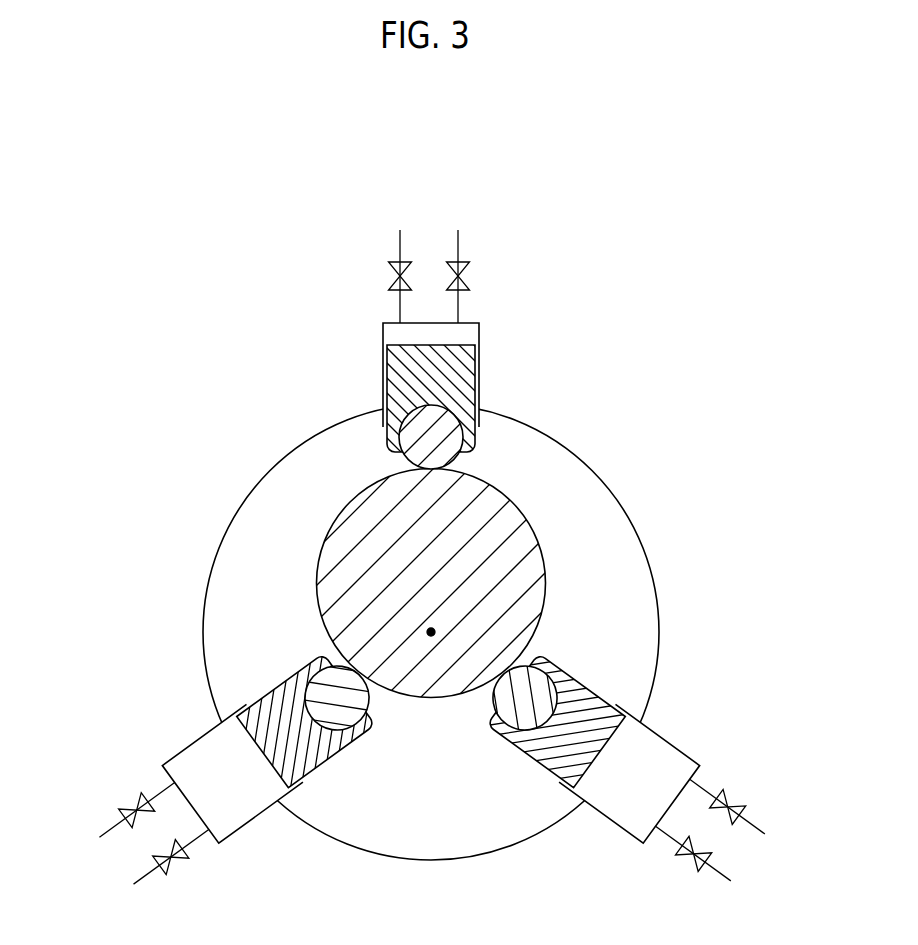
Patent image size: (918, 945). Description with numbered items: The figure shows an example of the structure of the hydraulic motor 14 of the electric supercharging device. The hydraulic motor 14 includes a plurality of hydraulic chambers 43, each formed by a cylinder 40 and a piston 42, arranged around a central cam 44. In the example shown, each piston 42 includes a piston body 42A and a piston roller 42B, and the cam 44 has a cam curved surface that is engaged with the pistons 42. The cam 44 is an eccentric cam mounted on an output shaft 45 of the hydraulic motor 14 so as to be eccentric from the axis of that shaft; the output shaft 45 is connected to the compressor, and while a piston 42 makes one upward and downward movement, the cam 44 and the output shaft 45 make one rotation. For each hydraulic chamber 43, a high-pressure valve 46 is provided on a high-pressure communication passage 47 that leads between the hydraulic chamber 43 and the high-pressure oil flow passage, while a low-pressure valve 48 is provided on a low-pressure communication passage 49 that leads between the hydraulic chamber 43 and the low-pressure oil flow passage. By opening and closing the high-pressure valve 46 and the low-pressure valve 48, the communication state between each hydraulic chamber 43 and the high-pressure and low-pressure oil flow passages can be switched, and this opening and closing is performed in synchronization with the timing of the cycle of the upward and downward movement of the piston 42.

The hydraulic motor 14 is at (225, 421).
The cylinder 40 is at (478, 367).
The piston 42 is at (625, 385).
The piston body 42A is at (462, 428).
The piston roller 42B is at (476, 446).
The hydraulic chamber 43 is at (459, 334).
The cam 44 is at (545, 570).
The output shaft 45 is at (643, 538).
The high-pressure valve 46 is at (467, 272).
The high-pressure communication passage 47 is at (458, 242).
The low-pressure valve 48 is at (388, 272).
The low-pressure communication passage 49 is at (400, 242).